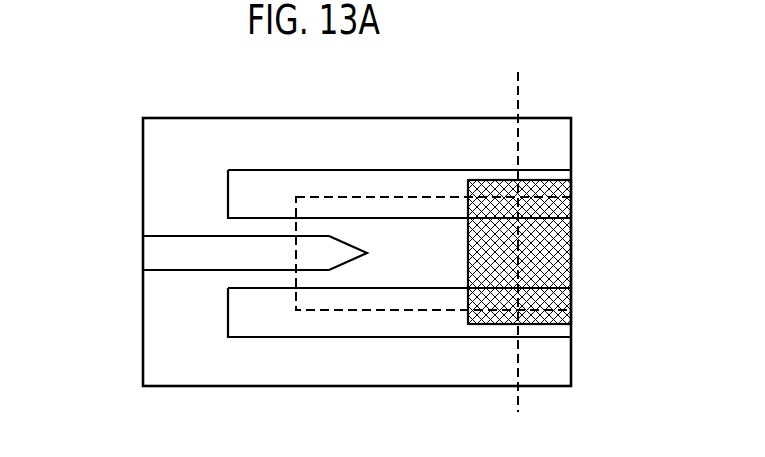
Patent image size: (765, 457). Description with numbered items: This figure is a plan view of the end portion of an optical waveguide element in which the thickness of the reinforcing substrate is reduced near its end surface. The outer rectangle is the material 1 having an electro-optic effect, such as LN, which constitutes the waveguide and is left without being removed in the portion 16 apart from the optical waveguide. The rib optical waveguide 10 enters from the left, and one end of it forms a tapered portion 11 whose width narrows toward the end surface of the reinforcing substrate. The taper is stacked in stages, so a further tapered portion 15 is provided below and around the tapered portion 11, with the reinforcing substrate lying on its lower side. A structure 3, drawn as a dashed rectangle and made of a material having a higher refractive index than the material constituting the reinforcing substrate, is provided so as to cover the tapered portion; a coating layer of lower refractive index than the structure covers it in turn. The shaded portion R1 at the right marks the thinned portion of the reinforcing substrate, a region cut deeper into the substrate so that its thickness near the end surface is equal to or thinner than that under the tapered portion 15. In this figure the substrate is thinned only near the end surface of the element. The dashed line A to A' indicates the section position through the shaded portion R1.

The material having an electro-optic effect 1 is at (193, 358).
The structure 3 is at (433, 197).
The rib optical waveguide 10 is at (158, 250).
The tapered portion 11 is at (339, 240).
The tapered portion 15 is at (410, 278).
The portion apart from the optical waveguide 16 is at (553, 143).
The shaded portion R1 is at (555, 275).
The section line A is at (518, 141).
The section line A' is at (515, 346).